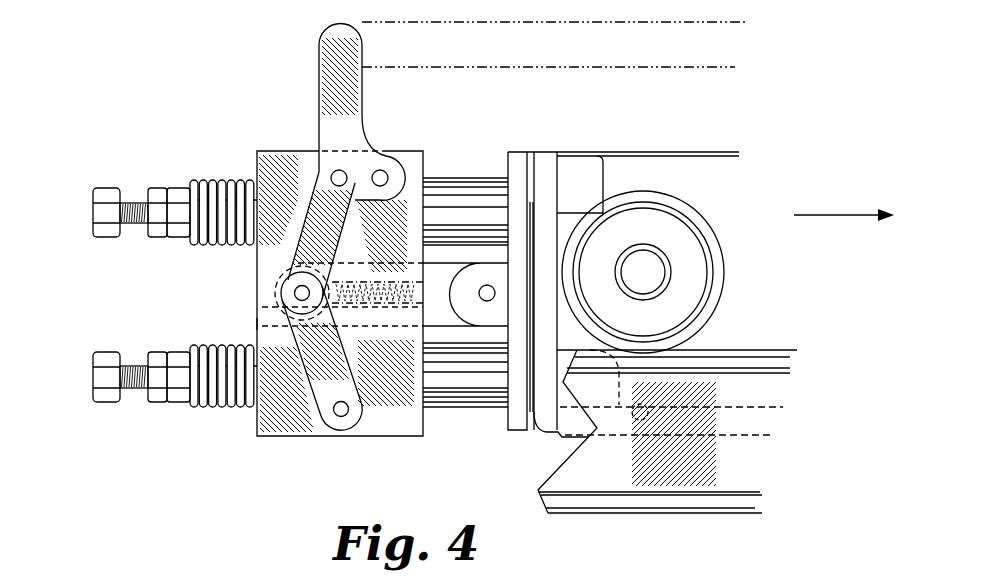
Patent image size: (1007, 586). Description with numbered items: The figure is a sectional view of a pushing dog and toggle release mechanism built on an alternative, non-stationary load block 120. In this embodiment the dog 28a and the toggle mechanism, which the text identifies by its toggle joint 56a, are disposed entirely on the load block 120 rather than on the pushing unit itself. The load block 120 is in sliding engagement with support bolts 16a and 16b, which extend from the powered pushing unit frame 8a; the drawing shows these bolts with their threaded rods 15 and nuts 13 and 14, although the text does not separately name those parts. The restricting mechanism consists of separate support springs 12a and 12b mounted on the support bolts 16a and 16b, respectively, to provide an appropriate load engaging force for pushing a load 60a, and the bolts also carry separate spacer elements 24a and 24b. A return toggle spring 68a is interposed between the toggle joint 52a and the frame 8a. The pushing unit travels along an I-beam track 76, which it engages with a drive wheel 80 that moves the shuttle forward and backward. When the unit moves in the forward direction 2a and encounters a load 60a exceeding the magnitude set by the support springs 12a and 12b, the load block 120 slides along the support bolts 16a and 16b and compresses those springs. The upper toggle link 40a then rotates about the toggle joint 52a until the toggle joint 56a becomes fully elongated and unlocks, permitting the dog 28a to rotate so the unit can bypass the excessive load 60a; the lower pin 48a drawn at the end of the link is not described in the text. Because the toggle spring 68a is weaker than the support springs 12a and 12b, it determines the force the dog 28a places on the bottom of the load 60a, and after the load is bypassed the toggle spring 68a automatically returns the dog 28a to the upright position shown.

The forward direction 2a is at (832, 213).
The powered pushing unit frame 8a is at (540, 163).
The support spring 12a is at (215, 184).
The support spring 12b is at (237, 403).
The adjustment nut 13 is at (177, 193).
The lock nut 14 is at (157, 197).
The threaded rod 15 is at (134, 203).
The support bolt 16a is at (107, 230).
The support bolt 16b is at (103, 377).
The spacer element 24a is at (480, 212).
The spacer element 24b is at (483, 382).
The dog 28a is at (337, 35).
The upper toggle link 40a is at (298, 255).
The lower pivot pin 48a is at (347, 380).
The toggle joint 52a is at (293, 293).
The toggle joint 56a is at (262, 322).
The load 60a is at (455, 52).
The return toggle spring 68a is at (401, 293).
The I-beam track 76 is at (730, 461).
The drive wheel 80 is at (688, 279).
The non-stationary load block 120 is at (308, 165).